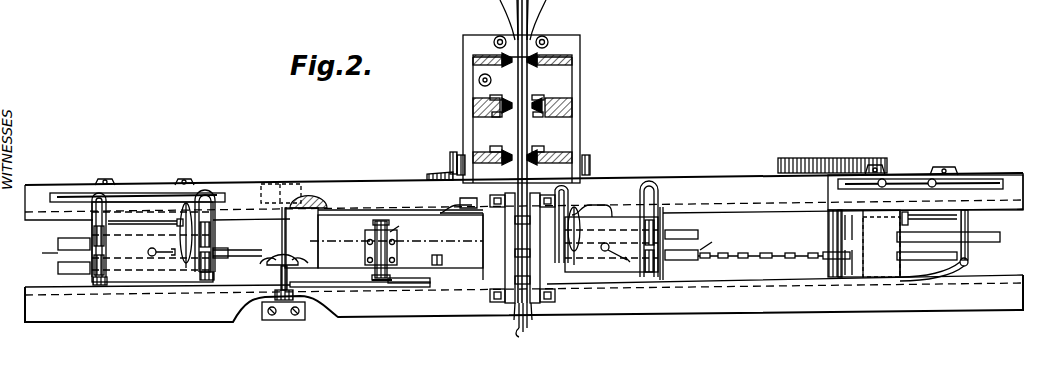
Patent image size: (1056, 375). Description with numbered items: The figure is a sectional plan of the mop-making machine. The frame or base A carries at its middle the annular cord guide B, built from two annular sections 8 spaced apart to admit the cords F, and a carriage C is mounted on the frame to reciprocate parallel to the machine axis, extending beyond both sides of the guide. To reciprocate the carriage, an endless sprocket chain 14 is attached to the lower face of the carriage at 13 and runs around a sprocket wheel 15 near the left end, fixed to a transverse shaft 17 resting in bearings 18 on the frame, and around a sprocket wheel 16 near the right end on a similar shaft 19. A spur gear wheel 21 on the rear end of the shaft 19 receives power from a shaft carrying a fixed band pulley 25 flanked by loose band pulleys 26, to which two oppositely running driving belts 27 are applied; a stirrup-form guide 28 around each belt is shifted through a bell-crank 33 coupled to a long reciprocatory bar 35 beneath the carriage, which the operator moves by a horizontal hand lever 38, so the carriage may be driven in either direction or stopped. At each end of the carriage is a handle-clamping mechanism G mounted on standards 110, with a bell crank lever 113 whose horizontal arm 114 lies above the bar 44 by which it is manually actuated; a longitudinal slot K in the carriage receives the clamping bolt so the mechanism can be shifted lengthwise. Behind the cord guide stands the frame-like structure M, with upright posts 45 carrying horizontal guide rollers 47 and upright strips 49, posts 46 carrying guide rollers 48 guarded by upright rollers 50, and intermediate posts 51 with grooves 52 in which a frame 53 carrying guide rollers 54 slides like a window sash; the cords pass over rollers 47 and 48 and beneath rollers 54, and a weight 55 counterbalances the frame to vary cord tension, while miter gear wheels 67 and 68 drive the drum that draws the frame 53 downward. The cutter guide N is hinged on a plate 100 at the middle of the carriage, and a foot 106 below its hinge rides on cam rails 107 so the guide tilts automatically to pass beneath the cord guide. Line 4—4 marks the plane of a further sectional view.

The section line 4— 4 is at (152, 345).
The sprocket wheel 15 is at (252, 374).
The sprocket wheel 16 is at (768, 340).
The horizontal bar 44 is at (66, 193).
The bell crank lever 113 is at (92, 229).
The standards 110 is at (98, 280).
The horizontal arm 114 is at (206, 195).
The bearings 18 is at (307, 168).
The transverse horizontal shaft 17 is at (292, 278).
The foot 106 is at (380, 281).
The plate 100 is at (397, 262).
The cam rail 107 is at (420, 284).
The annular sections 8 is at (512, 303).
The horizontal hand lever 38 is at (524, 330).
The chain attachment point 13 is at (433, 257).
The upright rollers 50 is at (496, 37).
The posts 46 is at (567, 56).
The guide rollers 48 is at (550, 65).
The weight 55 is at (478, 80).
The frame 53 is at (504, 83).
The upright posts 51 is at (473, 106).
The guide rollers 54 is at (545, 97).
The grooves 52 is at (498, 128).
The upright strip 49 is at (552, 131).
The upright posts 45 is at (476, 155).
The guide rollers 47 is at (545, 163).
The miter gear wheel 67 is at (448, 160).
The miter gear wheel 68 is at (440, 176).
The spur gear wheel 21 is at (826, 161).
The endless sprocket chain 14 is at (760, 247).
The loose band pulley 26 is at (828, 222).
The fixed band pulley 25 is at (828, 250).
The shaft 19 is at (828, 273).
The stirrup-form guide 28 is at (898, 230).
The bell-crank 33 is at (968, 229).
The driving belts 27 is at (984, 242).
The reciprocatory bar 35 is at (940, 277).
The frame A is at (524, 250).
The annular cord guide B is at (505, 251).
The carriage C is at (393, 247).
The handle-clamping mechanism G is at (375, 240).
The longitudinal slot K is at (377, 251).
The frame-like structure M is at (531, 109).
The cutter guide N is at (391, 247).
The cords F is at (523, 20).